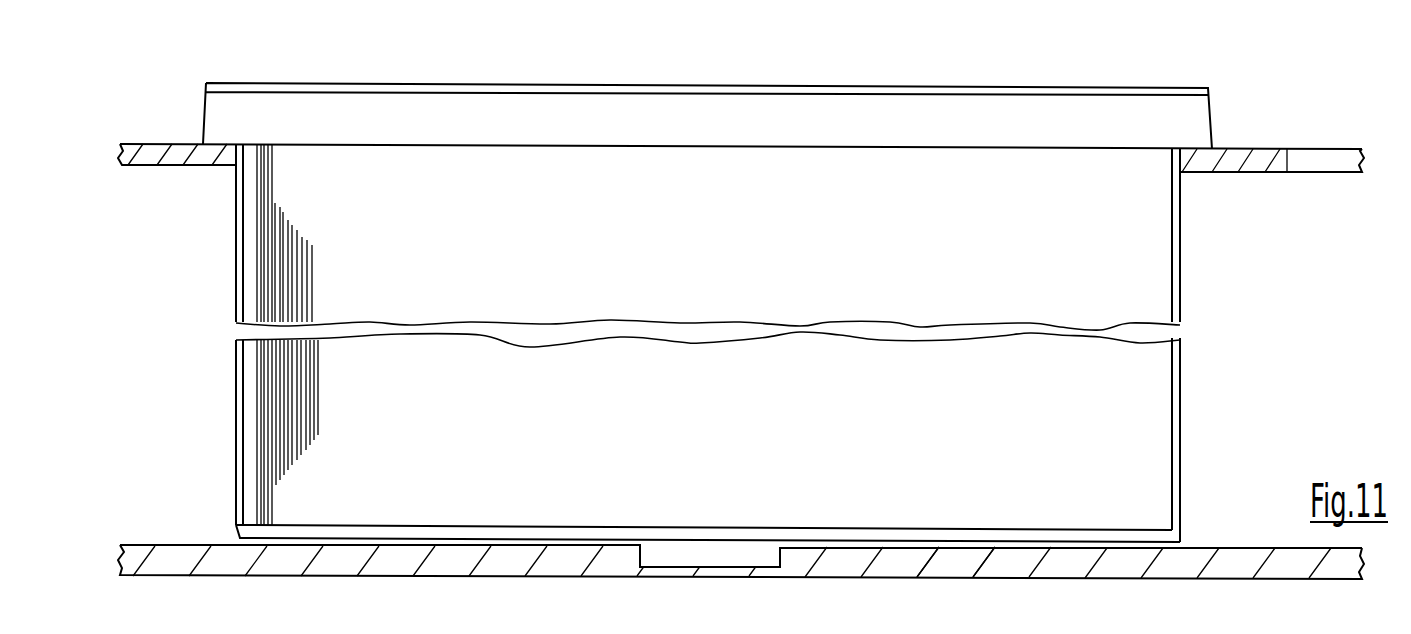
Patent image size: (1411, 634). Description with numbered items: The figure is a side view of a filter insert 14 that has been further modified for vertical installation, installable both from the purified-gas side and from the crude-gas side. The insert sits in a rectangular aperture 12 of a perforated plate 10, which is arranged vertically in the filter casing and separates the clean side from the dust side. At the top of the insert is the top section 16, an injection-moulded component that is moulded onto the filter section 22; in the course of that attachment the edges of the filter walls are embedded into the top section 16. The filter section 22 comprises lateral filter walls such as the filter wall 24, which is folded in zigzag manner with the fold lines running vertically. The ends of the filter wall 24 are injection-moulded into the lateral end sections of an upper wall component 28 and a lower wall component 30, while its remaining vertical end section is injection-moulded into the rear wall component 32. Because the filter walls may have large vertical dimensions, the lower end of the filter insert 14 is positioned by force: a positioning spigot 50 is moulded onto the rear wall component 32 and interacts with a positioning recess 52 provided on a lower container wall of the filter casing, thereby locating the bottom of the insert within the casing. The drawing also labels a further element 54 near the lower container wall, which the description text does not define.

The perforated plate 10 is at (1237, 160).
The rectangular aperture 12 is at (1177, 164).
The filter insert 14 is at (1288, 362).
The top section 16 is at (1222, 123).
The filter section 22 is at (1195, 432).
The filter wall 24 is at (790, 449).
The upper wall component 28 is at (1178, 294).
The lower wall component 30 is at (240, 310).
The rear wall component 32 is at (503, 535).
The positioning spigot 50 is at (683, 548).
The positioning recess 52 is at (773, 557).
The base plate portion 54 is at (950, 558).